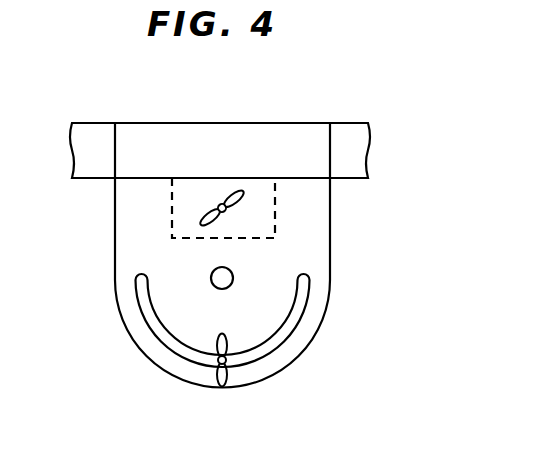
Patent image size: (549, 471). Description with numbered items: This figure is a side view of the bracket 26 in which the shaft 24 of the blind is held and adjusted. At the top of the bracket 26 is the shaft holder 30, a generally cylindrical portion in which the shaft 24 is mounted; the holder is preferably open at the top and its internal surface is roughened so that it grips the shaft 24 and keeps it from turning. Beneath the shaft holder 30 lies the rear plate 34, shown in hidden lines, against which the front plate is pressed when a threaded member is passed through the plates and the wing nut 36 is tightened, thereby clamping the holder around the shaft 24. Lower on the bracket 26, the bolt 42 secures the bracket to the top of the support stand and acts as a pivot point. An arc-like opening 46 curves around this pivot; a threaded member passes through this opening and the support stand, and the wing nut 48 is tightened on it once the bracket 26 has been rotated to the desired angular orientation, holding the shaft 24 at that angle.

The shaft 24 is at (91, 137).
The bracket 26 is at (338, 352).
The shaft holder 30 is at (153, 137).
The rear plate 34 is at (275, 220).
The wing nut 36 is at (204, 222).
The bolt 42 is at (216, 285).
The arc-like opening 46 is at (275, 340).
The wing nut 48 is at (230, 372).